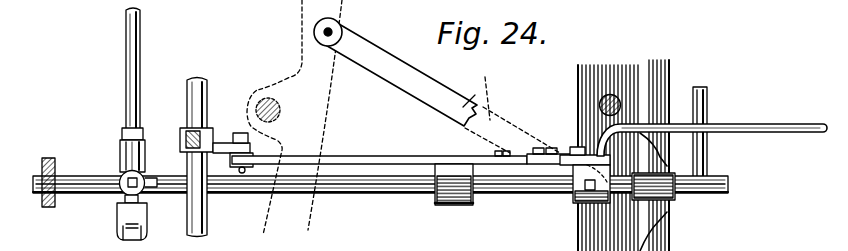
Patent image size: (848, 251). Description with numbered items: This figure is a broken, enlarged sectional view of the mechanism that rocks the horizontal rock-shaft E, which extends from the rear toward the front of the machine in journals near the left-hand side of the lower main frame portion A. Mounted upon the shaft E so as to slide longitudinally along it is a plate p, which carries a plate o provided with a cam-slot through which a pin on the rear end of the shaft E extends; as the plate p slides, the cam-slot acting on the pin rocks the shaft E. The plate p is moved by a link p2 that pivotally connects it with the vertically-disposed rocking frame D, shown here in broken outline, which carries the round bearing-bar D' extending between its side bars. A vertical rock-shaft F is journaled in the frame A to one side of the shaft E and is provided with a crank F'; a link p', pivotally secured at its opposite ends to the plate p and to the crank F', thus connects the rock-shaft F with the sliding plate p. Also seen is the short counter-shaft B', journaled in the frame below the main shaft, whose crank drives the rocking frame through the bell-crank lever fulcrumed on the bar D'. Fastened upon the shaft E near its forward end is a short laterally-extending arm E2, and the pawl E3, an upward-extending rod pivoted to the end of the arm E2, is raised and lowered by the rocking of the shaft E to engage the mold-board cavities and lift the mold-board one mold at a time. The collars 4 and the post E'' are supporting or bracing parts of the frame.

The lower main portion of the frame A is at (646, 155).
The horizontal rock-shaft E is at (402, 200).
The laterally-extending arm E2 is at (127, 205).
The pawl E3 is at (128, 64).
The post E'' is at (721, 130).
The collar 4 is at (55, 162).
The crank F' is at (176, 157).
The vertical rock-shaft F is at (216, 135).
The rocking frame D is at (294, 117).
The bearing-bar D' is at (256, 93).
The link p' is at (403, 143).
The sliding plate p is at (484, 199).
The link p2 is at (468, 93).
The counter-shaft B' is at (585, 103).
The plate o is at (788, 126).